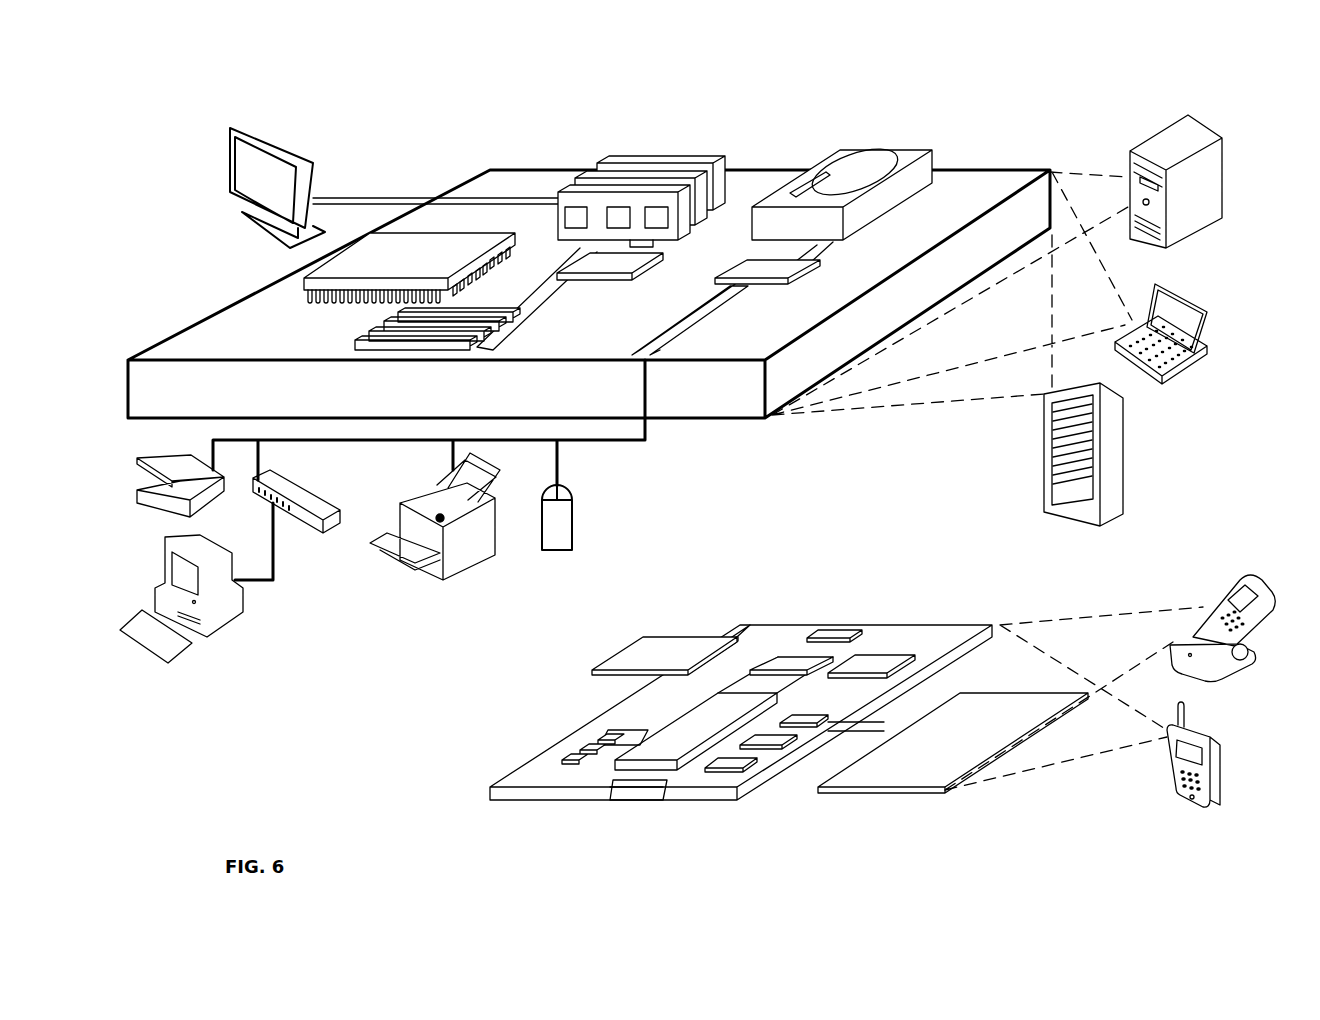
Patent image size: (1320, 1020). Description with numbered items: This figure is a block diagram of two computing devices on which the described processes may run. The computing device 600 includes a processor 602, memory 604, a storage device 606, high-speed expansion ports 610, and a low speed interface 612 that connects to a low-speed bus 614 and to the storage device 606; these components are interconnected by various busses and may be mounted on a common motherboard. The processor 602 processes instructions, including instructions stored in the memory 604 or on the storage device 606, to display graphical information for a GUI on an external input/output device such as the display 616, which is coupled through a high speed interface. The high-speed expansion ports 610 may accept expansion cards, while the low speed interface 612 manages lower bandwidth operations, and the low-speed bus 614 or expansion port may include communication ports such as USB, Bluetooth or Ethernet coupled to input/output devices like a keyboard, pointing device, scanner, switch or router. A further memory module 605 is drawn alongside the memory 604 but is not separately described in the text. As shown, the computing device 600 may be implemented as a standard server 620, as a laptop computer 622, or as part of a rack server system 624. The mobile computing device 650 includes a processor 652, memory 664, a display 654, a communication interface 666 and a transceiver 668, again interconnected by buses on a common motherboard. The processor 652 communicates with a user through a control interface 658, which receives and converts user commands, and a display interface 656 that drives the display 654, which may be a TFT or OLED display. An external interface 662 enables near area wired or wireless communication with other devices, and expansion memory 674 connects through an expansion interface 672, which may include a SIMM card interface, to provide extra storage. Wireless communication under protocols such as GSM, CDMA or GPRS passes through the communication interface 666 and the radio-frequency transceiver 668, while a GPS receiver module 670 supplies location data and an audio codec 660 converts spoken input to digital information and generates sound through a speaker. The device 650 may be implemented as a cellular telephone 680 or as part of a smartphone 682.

The computing device 600 is at (1238, 104).
The processor 602 is at (300, 288).
The memory 604 is at (625, 160).
The memory module 605 is at (595, 166).
The storage device 606 is at (843, 150).
The high-speed expansion ports 610 is at (373, 328).
The low speed interface 612 is at (753, 270).
The low-speed bus 614 is at (657, 362).
The display 616 is at (236, 128).
The standard server 620 is at (1143, 138).
The laptop computer 622 is at (1170, 368).
The rack server system 624 is at (1044, 487).
The computing device 650 is at (564, 686).
The processor 652 is at (677, 750).
The display 654 is at (923, 765).
The display interface 656 is at (728, 765).
The control interface 658 is at (773, 748).
The audio codec 660 is at (808, 722).
The external interface 662 is at (630, 800).
The memory 664 is at (587, 743).
The communication interface 666 is at (785, 660).
The transceiver 668 is at (878, 660).
The GPS receiver module 670 is at (847, 632).
The expansion interface 672 is at (722, 638).
The expansion memory 674 is at (627, 642).
The flip phone 680 is at (1230, 583).
The smartphone 682 is at (1167, 760).